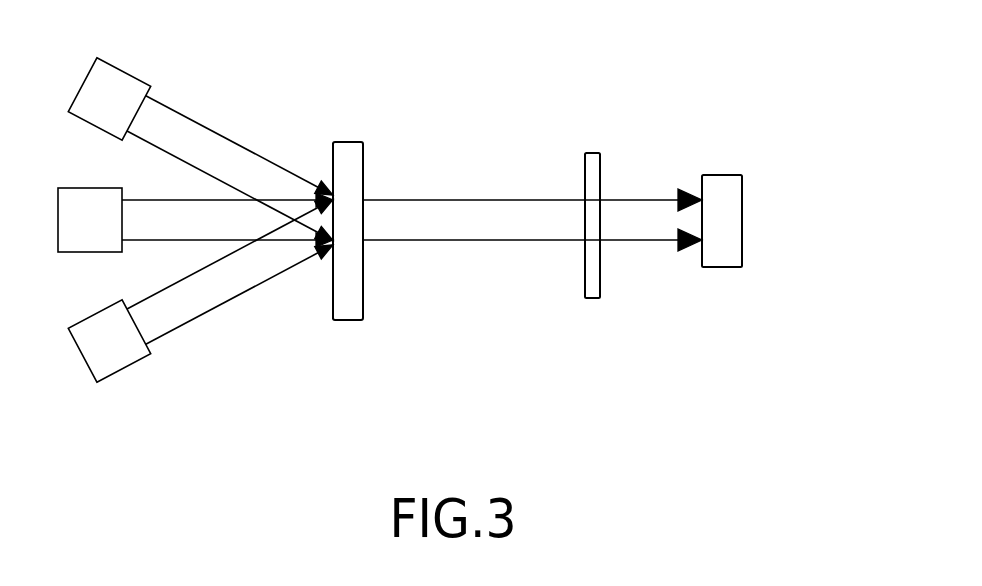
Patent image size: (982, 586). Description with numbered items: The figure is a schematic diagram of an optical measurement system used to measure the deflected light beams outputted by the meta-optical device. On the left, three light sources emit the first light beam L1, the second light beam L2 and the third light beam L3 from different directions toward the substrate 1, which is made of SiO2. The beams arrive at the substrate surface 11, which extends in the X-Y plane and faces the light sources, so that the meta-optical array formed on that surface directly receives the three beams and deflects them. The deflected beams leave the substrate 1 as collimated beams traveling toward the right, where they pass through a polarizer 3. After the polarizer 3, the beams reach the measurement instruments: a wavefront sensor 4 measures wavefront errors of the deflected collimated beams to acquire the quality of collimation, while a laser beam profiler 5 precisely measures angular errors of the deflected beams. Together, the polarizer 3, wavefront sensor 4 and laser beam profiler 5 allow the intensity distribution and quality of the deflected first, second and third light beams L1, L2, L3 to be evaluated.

The substrate 1 is at (365, 160).
The substrate surface 11 is at (333, 160).
The polarizer 3 is at (593, 152).
The wavefront sensor 4 is at (721, 175).
The laser beam profiler 5 is at (745, 205).
The first light beam L1 is at (188, 120).
The second light beam L2 is at (157, 200).
The third light beam L3 is at (205, 313).